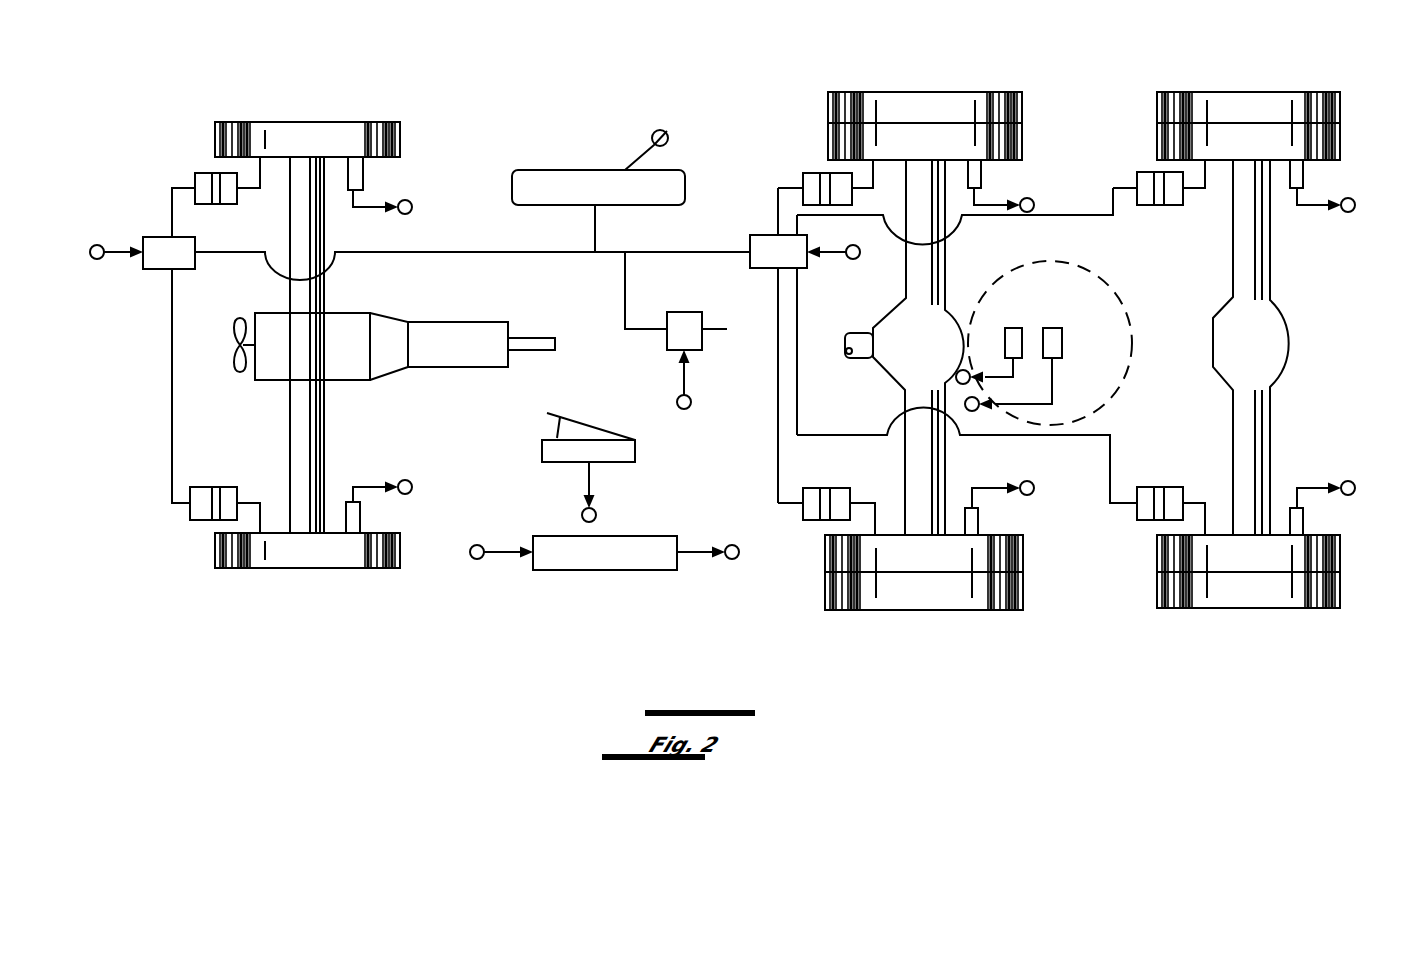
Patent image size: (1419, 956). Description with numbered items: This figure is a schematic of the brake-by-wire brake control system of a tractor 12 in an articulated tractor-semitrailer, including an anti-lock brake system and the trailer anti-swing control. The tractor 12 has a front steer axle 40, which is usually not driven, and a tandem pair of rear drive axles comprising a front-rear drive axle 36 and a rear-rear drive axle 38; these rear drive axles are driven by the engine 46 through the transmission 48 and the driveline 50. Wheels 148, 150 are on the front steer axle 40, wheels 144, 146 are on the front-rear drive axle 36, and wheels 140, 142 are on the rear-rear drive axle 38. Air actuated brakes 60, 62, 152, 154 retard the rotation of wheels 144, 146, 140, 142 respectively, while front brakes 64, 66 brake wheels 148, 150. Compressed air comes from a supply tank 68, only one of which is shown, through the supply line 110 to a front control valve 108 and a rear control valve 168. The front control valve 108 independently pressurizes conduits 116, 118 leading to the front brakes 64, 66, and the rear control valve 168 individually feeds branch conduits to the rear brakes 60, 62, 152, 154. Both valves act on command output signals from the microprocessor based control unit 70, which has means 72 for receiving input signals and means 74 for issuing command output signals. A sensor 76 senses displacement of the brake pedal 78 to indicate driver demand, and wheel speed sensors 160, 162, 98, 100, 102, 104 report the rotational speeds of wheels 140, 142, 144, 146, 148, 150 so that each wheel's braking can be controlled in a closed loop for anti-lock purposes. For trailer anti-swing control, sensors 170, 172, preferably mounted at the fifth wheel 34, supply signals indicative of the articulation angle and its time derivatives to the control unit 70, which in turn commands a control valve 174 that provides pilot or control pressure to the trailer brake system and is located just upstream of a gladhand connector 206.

The tractor 12 is at (624, 140).
The fifth wheel 34 is at (1098, 400).
The front-rear drive axle 36 is at (916, 82).
The rear-rear drive axle 38 is at (1223, 82).
The front steer axle 40 is at (326, 110).
The engine 46 is at (345, 362).
The transmission 48 is at (460, 352).
The driveline 50 is at (532, 338).
The air actuated brake 60 is at (808, 175).
The air actuated brake 62 is at (822, 490).
The front brake 64 is at (223, 198).
The front brake 66 is at (207, 490).
The supply tank 68 is at (562, 180).
The control unit 70 is at (658, 562).
The means for receiving input signals 72 is at (500, 552).
The means for issuing command output signals 74 is at (697, 547).
The sensor 76 is at (633, 452).
The brake pedal 78 is at (577, 423).
The wheel speed sensor 98 is at (985, 172).
The wheel speed sensor 100 is at (985, 520).
The wheel speed sensor 102 is at (365, 170).
The wheel speed sensor 104 is at (363, 519).
The front control valve 108 is at (157, 267).
The supply line 110 is at (510, 252).
The conduit 116 is at (172, 200).
The conduit 118 is at (172, 388).
The wheel 140 is at (1305, 107).
The wheel 142 is at (1230, 590).
The wheel 144 is at (992, 107).
The wheel 146 is at (888, 585).
The wheel 148 is at (243, 130).
The wheel 150 is at (280, 552).
The air actuated brake 152 is at (1168, 205).
The air actuated brake 154 is at (1153, 490).
The wheel speed sensor 160 is at (1305, 172).
The wheel speed sensor 162 is at (1305, 521).
The rear control valve 168 is at (745, 238).
The sensor 170 is at (1056, 330).
The sensor 172 is at (1010, 330).
The control valve 174 is at (685, 318).
The gladhand connector 206 is at (727, 329).